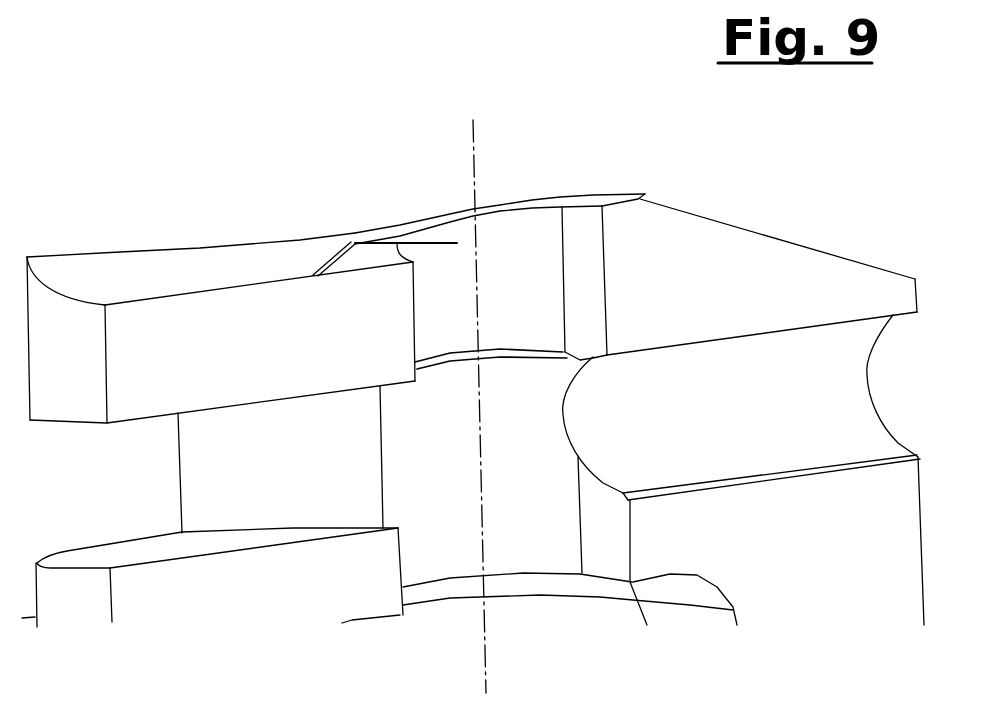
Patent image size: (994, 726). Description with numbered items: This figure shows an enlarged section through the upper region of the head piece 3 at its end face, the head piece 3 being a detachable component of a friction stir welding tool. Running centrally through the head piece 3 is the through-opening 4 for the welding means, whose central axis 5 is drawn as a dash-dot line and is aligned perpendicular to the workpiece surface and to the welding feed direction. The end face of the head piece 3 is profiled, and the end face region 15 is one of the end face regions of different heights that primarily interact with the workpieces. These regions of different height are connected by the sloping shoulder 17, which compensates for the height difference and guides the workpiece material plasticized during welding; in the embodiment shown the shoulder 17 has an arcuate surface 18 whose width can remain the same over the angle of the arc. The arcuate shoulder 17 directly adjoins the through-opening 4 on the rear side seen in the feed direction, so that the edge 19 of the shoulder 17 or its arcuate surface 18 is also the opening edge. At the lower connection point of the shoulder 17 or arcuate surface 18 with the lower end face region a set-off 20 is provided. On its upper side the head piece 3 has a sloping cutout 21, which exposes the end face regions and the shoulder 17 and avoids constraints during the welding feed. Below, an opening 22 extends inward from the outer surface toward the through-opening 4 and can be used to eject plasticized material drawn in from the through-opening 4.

The head piece 3 is at (170, 268).
The through-opening 4 is at (732, 263).
The central axis 5 is at (470, 137).
The end face region 15 is at (347, 263).
The sloping shoulder 17 is at (500, 173).
The arcuate surface 18 is at (532, 200).
The edge 19 is at (457, 243).
The set-off 20 is at (387, 245).
The sloping cutout 21 is at (778, 238).
The opening 22 is at (215, 476).